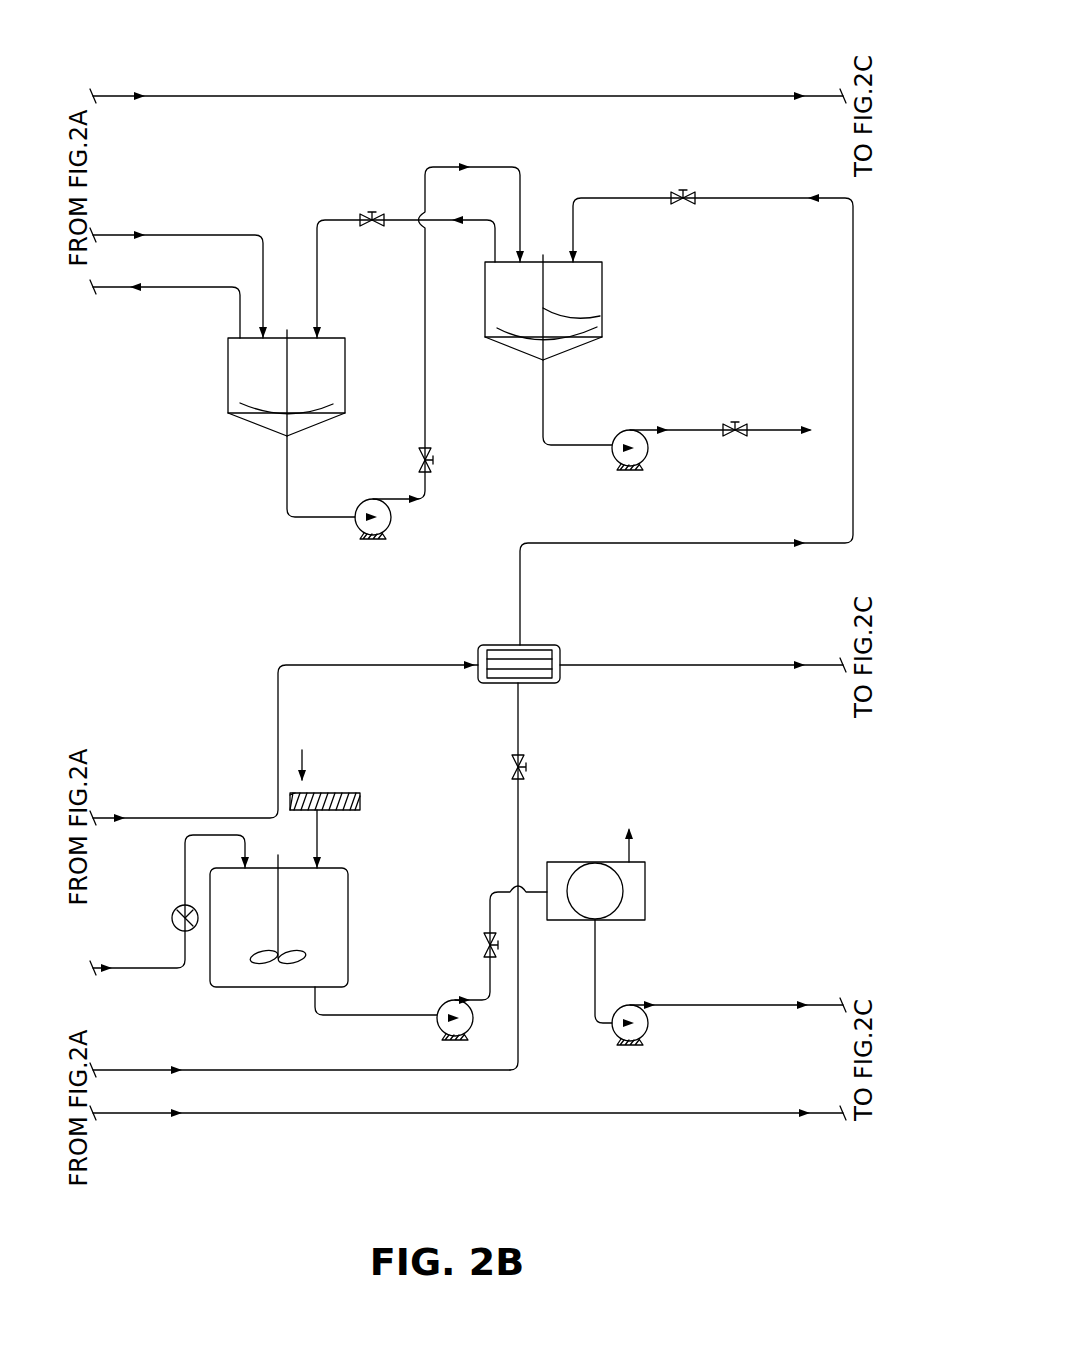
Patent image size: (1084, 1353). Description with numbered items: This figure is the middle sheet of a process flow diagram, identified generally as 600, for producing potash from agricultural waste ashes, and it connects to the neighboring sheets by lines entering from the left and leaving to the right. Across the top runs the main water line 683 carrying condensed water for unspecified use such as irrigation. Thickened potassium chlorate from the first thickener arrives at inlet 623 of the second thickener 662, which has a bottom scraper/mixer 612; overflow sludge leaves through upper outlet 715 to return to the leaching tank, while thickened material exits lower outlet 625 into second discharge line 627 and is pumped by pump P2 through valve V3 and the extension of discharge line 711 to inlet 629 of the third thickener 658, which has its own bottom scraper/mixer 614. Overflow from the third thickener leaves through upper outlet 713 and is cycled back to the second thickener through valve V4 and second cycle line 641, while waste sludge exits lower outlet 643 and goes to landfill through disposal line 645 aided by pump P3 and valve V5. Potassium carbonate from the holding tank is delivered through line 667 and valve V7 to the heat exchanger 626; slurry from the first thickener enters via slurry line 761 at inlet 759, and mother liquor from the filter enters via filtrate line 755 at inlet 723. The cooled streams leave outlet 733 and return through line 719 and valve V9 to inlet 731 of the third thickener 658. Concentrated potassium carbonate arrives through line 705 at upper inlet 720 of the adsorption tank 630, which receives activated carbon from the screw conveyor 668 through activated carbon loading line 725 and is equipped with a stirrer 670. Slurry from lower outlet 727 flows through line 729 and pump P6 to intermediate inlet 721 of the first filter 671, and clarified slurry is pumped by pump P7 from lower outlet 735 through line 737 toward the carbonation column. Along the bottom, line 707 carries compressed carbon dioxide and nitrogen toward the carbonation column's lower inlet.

The system 600 is at (256, 72).
The main water line 683 is at (546, 95).
The inlet 623 is at (252, 330).
The upper outlet 715 is at (236, 338).
The second cycle line 641 is at (384, 254).
The bottom scraper/mixer 612 is at (299, 398).
The lower outlet 625 is at (278, 440).
The second thickener 662 is at (344, 382).
The second discharge line 627 is at (359, 365).
The extension of discharge line 711 is at (480, 165).
The inlet 629 is at (524, 255).
The upper outlet 713 is at (490, 263).
The third thickener 658 is at (588, 306).
The bottom scraper/mixer 614 is at (601, 316).
The inlet 731 is at (731, 417).
The line 719 is at (856, 382).
The lower outlet 643 is at (541, 376).
The disposal line 645 is at (547, 404).
The outlet 733 is at (513, 645).
The heat exchanger 626 is at (530, 645).
The slurry line 761 is at (403, 668).
The inlet 759 is at (470, 662).
The inlet 723 is at (565, 666).
The filtrate line 755 is at (773, 668).
The screw conveyor 668 is at (336, 793).
The activated carbon loading line 725 is at (327, 820).
The adsorption tank 630 is at (309, 921).
The stirrer 670 is at (313, 918).
The concentrated potassium carbonate line 705 is at (121, 970).
The upper inlet 720 is at (268, 870).
The lower outlet 727 is at (327, 997).
The line 729 is at (444, 958).
The lower outlet 735 is at (598, 921).
The first filter 671 is at (580, 862).
The intermediate inlet 721 is at (550, 894).
The line 737 is at (693, 997).
The line 667 is at (318, 1073).
The line 707 is at (400, 1118).
The pump P2 is at (373, 533).
The pump P3 is at (630, 464).
The pump P6 is at (455, 1034).
The pump P7 is at (598, 1022).
The valve V3 is at (441, 461).
The valve V4 is at (371, 232).
The valve V5 is at (735, 444).
The valve V7 is at (536, 768).
The valve V9 is at (683, 211).